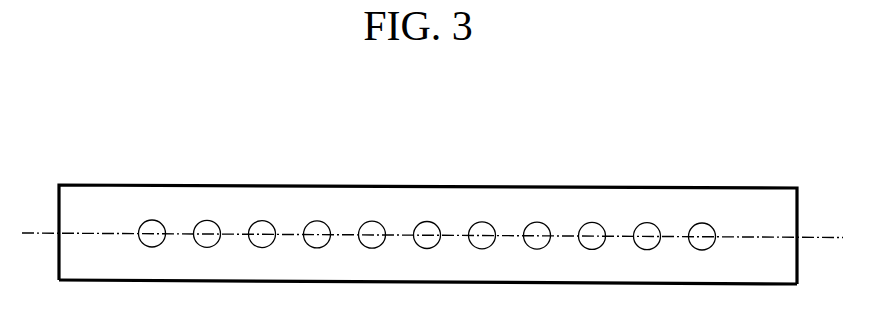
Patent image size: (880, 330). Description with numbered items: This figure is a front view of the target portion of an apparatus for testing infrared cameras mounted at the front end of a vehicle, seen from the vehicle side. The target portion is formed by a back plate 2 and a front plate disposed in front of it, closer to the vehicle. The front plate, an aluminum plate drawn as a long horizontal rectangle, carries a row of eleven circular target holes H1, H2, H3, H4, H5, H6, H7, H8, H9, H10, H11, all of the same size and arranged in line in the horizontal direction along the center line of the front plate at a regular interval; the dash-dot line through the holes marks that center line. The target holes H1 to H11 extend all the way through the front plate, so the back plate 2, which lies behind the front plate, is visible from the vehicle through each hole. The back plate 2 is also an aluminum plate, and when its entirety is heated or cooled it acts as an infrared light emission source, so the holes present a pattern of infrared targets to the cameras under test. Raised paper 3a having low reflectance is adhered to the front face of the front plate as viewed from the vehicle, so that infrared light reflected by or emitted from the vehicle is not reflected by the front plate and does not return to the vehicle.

The back plate 2 is at (457, 186).
The raised paper 3a is at (752, 275).
The target hole H1 is at (152, 221).
The target hole H2 is at (207, 221).
The target hole H3 is at (262, 222).
The target hole H4 is at (317, 222).
The target hole H5 is at (372, 222).
The target hole H6 is at (427, 223).
The target hole H7 is at (482, 223).
The target hole H8 is at (537, 223).
The target hole H9 is at (592, 223).
The target hole H10 is at (647, 223).
The target hole H11 is at (702, 223).